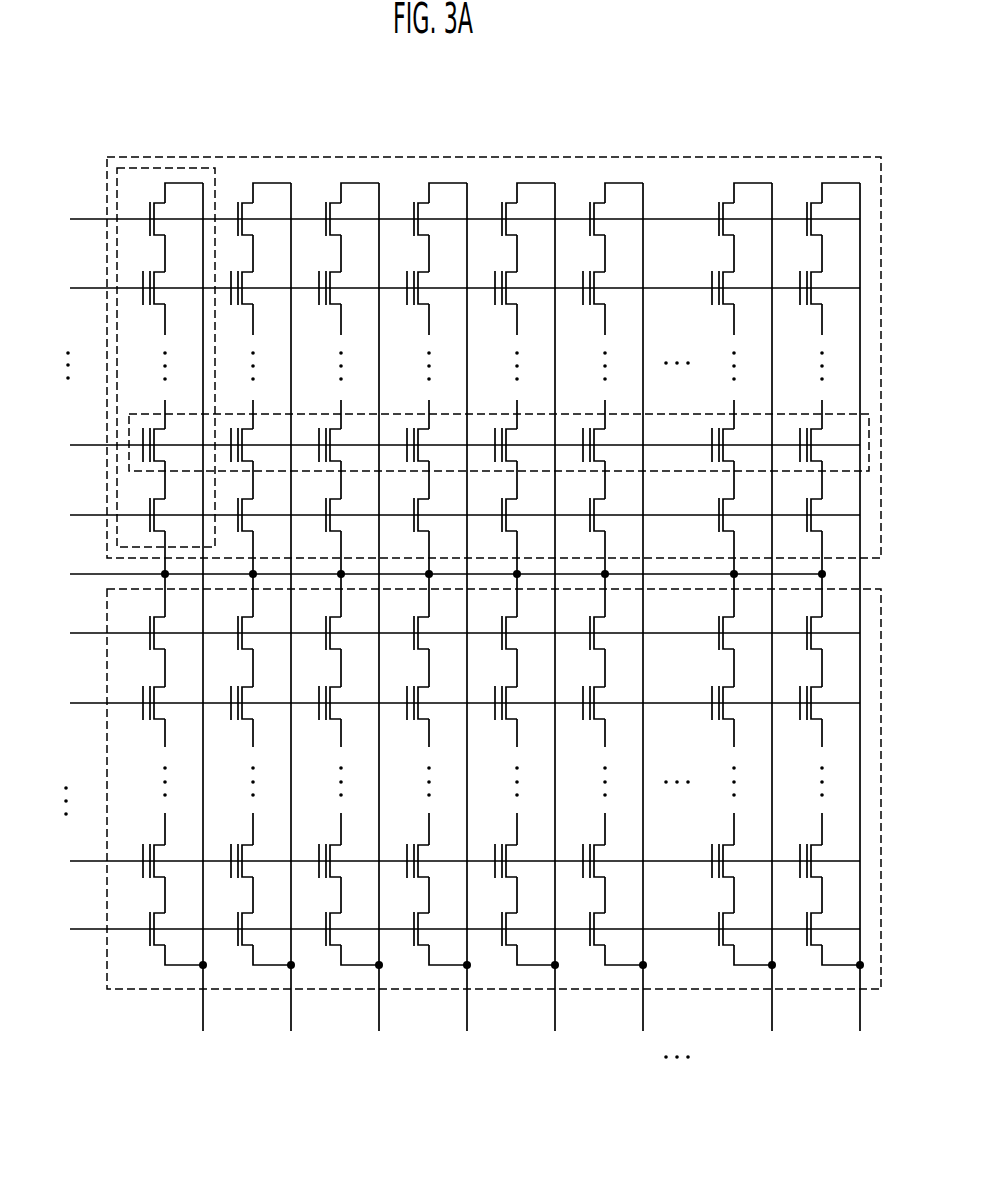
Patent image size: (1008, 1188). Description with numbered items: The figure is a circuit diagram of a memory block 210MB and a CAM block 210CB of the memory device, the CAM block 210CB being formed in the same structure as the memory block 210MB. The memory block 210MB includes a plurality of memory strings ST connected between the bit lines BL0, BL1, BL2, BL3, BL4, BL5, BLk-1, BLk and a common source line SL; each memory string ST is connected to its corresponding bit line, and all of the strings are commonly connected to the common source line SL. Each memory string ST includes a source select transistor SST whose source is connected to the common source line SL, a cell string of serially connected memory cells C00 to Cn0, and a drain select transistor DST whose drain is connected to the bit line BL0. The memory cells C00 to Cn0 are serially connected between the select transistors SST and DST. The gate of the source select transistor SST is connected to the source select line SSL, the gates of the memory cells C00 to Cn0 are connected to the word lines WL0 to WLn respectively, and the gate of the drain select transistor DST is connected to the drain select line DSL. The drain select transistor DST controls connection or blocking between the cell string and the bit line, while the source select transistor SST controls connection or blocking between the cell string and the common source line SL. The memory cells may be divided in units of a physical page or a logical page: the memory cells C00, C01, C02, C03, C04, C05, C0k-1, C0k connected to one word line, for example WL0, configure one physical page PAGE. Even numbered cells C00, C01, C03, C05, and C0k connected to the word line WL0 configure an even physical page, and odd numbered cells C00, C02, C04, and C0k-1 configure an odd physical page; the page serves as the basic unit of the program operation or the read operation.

The memory block 210MB is at (107, 330).
The CAM block 210CB is at (107, 745).
The memory string ST is at (168, 168).
The physical page PAGE is at (129, 414).
The drain select transistor DST is at (171, 217).
The source select transistor SST is at (171, 513).
The memory cell Cn0 is at (167, 285).
The memory cell C00 is at (166, 442).
The memory cell C01 is at (254, 442).
The memory cell C02 is at (342, 442).
The memory cell C03 is at (430, 442).
The memory cell C04 is at (518, 442).
The memory cell C05 is at (606, 442).
The memory cell C0k-1 is at (741, 442).
The memory cell C0k is at (823, 442).
The drain select line DSL is at (452, 574).
The source select line SSL is at (452, 574).
The word line WL0 is at (450, 574).
The word line WLn is at (450, 574).
The common source line SL is at (438, 574).
The bit line BL0 is at (202, 625).
The bit line BL1 is at (290, 625).
The bit line BL2 is at (378, 625).
The bit line BL3 is at (466, 625).
The bit line BL4 is at (554, 625).
The bit line BL5 is at (642, 625).
The bit line BLk-1 is at (768, 625).
The bit line BLk is at (864, 625).